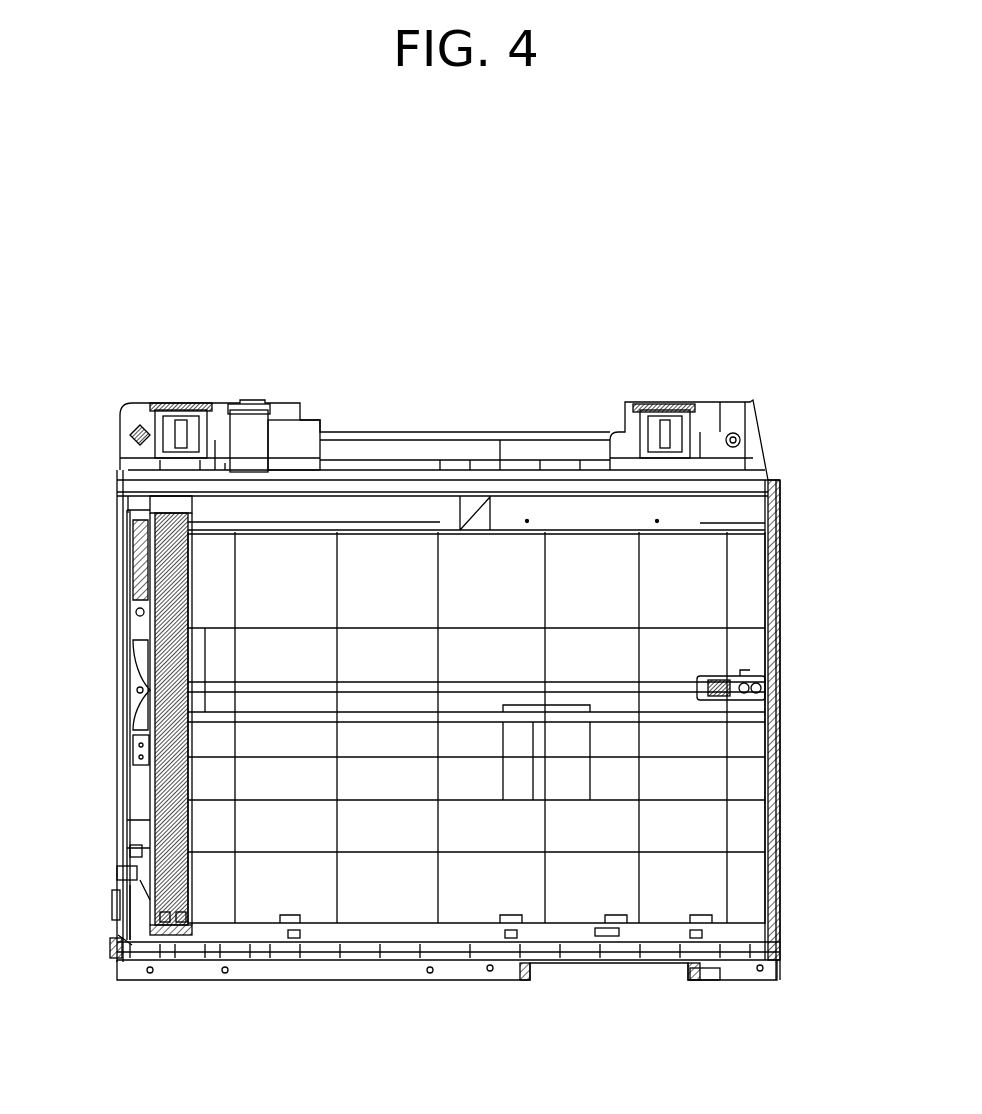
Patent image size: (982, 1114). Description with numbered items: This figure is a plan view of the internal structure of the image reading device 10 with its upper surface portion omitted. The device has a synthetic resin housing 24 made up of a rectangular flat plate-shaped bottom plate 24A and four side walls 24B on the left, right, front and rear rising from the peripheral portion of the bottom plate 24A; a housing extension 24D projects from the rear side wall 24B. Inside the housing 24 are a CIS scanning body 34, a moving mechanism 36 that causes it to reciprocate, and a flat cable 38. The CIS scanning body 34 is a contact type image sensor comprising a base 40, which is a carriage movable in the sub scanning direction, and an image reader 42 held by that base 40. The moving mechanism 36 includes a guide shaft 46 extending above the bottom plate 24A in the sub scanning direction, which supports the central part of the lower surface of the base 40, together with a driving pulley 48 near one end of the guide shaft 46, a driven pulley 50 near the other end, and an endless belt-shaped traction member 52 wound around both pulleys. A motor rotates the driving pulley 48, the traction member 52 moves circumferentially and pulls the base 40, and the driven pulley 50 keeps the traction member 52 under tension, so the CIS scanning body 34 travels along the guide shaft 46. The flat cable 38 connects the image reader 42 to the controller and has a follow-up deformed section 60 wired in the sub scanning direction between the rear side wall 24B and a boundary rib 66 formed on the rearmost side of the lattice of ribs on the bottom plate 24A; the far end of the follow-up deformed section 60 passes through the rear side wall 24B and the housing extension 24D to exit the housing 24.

The image reading device 10 is at (140, 272).
The housing 24 is at (800, 735).
The bottom plate 24A is at (382, 905).
The side walls 24B is at (527, 482).
The housing extension 24D is at (683, 412).
The CIS scanning body 34 is at (125, 823).
The moving mechanism 36 is at (470, 668).
The flat cable 38 is at (357, 496).
The base 40 is at (122, 906).
The image reader 42 is at (130, 871).
The guide shaft 46 is at (420, 736).
The driving pulley 48 is at (145, 694).
The driven pulley 50 is at (780, 669).
The traction member 52 is at (572, 681).
The follow-up deformed section 60 is at (370, 516).
The boundary rib 66 is at (700, 523).